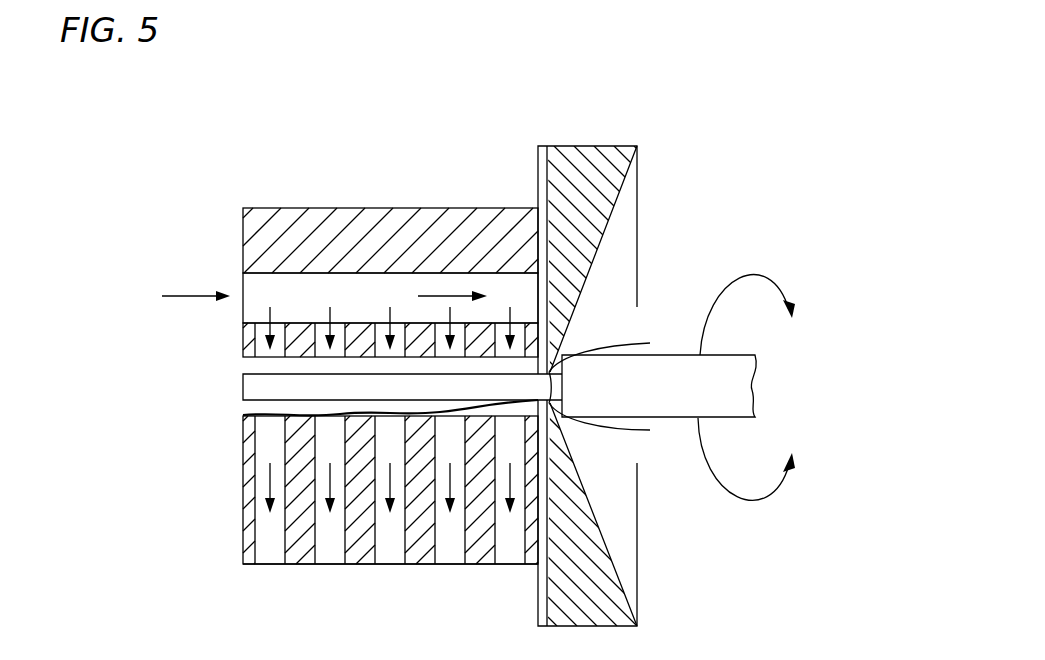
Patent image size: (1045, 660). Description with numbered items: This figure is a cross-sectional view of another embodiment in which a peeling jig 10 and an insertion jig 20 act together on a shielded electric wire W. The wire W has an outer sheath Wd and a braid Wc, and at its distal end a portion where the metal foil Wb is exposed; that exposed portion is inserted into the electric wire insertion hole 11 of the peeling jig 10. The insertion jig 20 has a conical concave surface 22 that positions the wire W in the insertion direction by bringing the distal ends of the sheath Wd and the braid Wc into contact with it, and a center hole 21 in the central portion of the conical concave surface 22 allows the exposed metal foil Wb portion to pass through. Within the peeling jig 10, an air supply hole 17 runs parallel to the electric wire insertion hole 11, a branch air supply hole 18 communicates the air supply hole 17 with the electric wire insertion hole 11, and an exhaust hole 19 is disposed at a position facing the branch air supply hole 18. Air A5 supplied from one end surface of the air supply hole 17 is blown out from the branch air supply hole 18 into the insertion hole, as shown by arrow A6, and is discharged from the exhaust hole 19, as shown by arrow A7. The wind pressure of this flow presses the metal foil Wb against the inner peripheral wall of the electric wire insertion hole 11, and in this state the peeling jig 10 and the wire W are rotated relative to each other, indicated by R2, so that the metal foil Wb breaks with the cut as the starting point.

The peeling jig 10 is at (428, 199).
The air supply hole 17 is at (332, 292).
The branch air supply hole 18 is at (250, 364).
The exhaust hole 19 is at (268, 548).
The electric wire insertion hole 11 is at (325, 428).
The insertion jig 20 is at (620, 353).
The center hole 21 is at (535, 400).
The conical concave surface 22 is at (610, 225).
The shielded electric wire W is at (673, 430).
The metal foil Wb is at (263, 417).
The braid Wc is at (635, 340).
The sheath Wd is at (668, 355).
The air A5 is at (196, 285).
The arrow A6 is at (243, 316).
The arrow A7 is at (270, 485).
The rotation direction R2 is at (787, 293).